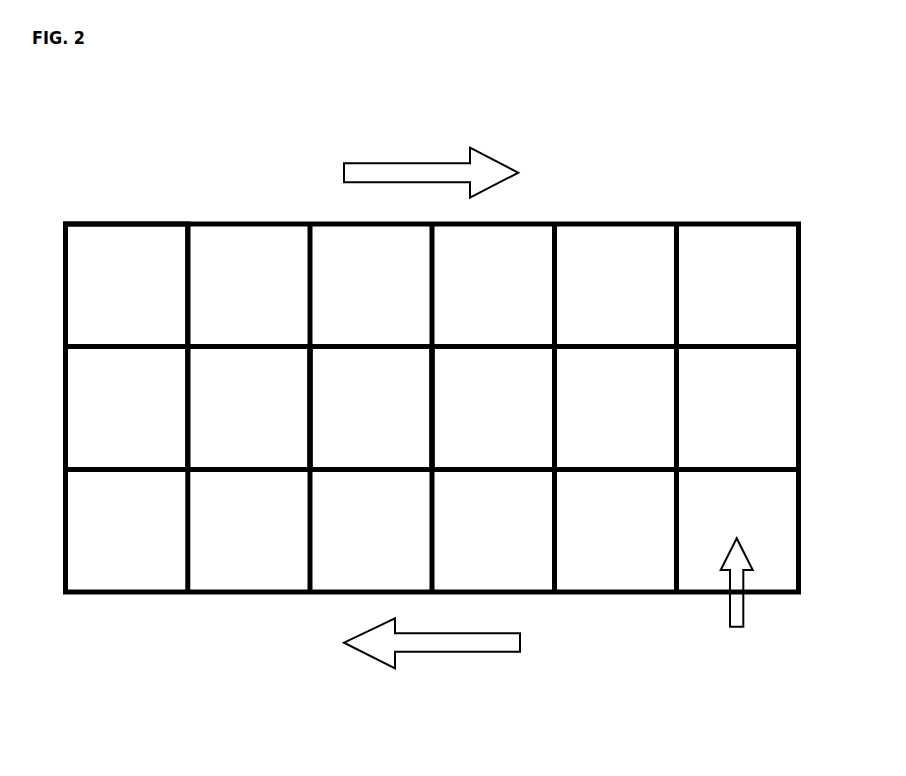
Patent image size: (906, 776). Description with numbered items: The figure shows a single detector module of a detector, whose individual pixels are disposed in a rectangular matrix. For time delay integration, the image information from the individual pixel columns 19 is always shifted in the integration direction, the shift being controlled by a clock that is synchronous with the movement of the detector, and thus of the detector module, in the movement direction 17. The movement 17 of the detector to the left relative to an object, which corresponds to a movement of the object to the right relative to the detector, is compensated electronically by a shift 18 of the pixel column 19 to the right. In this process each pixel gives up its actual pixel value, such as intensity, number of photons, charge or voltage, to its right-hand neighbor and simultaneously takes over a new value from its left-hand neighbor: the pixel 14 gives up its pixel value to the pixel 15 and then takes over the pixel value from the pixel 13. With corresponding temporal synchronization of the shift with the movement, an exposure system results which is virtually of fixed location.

The pixel 13 is at (124, 242).
The pixel 14 is at (371, 408).
The pixel 15 is at (493, 408).
The movement direction 17 is at (446, 642).
The shift 18 is at (413, 170).
The pixel column 19 is at (737, 613).